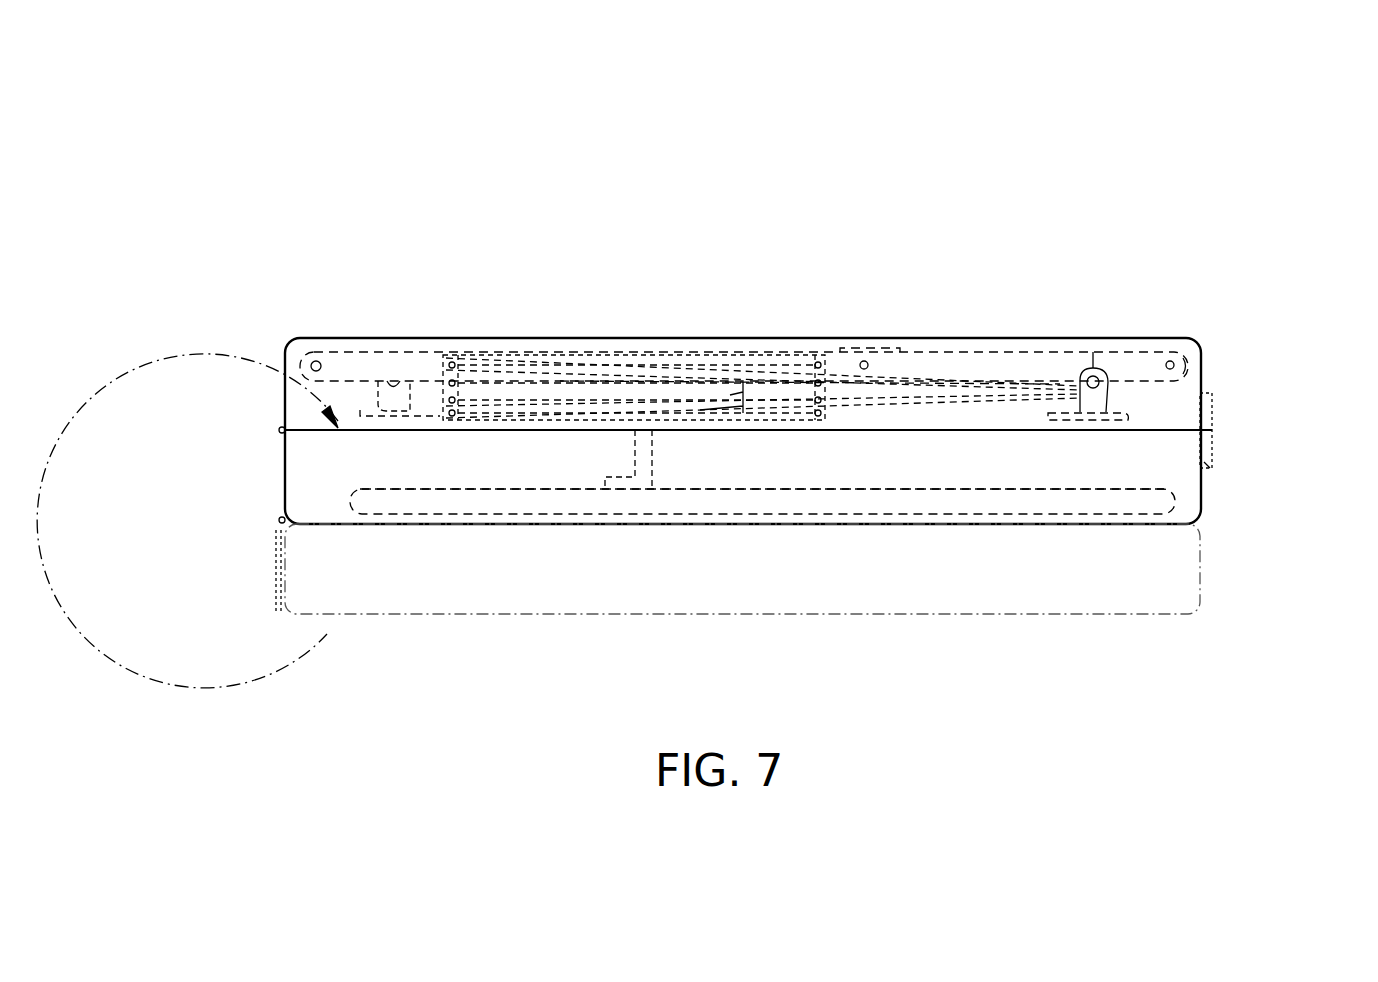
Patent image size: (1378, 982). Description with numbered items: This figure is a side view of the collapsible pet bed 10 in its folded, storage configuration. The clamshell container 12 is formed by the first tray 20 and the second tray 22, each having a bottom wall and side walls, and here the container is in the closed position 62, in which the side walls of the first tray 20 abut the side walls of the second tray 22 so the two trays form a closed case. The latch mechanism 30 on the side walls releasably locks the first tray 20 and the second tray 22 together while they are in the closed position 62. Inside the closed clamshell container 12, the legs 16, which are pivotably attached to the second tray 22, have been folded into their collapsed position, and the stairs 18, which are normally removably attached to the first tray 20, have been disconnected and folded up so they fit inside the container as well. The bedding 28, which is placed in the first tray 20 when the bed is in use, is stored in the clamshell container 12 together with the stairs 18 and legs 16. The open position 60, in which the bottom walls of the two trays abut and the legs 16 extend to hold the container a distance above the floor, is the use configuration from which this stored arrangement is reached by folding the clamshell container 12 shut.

The collapsible pet bed 10 is at (555, 208).
The clamshell container 12 is at (378, 328).
The legs 16 is at (952, 368).
The stairs 18 is at (592, 358).
The first tray 20 is at (1187, 480).
The second tray 22 is at (1202, 377).
The bedding 28 is at (922, 502).
The latch mechanism 30 is at (1222, 418).
The open position 60 is at (1215, 572).
The closed position 62 is at (1092, 328).